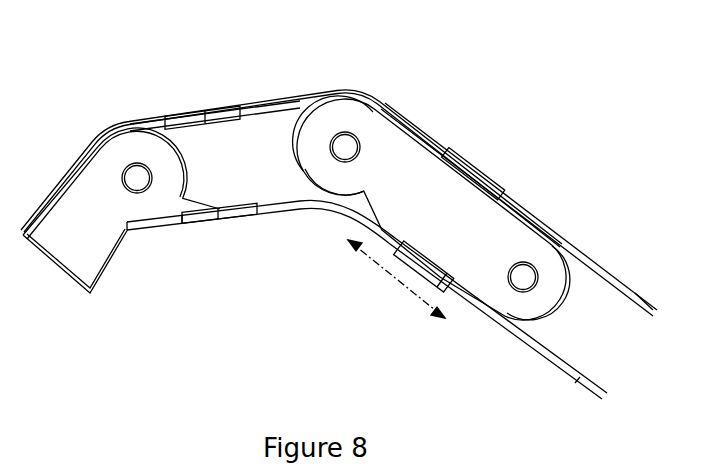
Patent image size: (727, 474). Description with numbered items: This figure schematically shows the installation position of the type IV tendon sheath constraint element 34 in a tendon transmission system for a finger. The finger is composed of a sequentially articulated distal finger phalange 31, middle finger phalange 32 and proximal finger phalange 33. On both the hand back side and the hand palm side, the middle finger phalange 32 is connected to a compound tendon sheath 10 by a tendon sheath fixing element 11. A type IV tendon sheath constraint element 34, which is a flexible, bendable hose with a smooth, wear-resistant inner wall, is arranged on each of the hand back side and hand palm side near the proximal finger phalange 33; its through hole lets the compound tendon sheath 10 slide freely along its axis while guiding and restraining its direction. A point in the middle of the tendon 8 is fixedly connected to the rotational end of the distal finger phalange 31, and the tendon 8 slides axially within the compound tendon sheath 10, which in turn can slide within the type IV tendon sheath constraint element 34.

The tendon 8 is at (135, 124).
The compound tendon sheath 10 is at (302, 202).
The tendon sheath fixing element 11 is at (233, 210).
The distal finger phalange 31 is at (97, 253).
The middle finger phalange 32 is at (262, 190).
The proximal finger phalange 33 is at (488, 287).
The type IV tendon sheath constraint element 34 is at (422, 263).